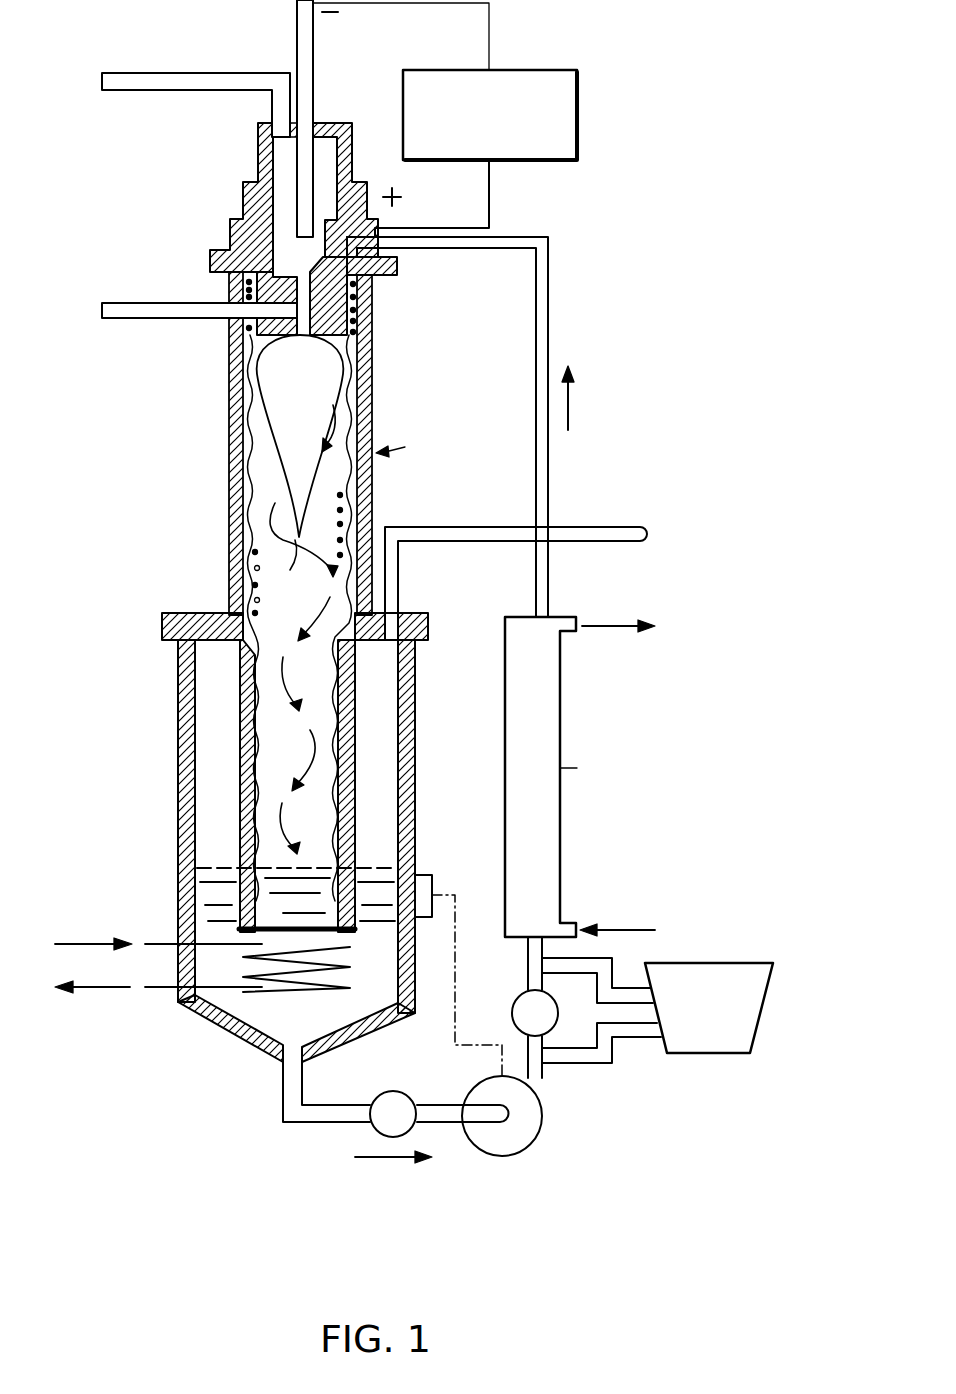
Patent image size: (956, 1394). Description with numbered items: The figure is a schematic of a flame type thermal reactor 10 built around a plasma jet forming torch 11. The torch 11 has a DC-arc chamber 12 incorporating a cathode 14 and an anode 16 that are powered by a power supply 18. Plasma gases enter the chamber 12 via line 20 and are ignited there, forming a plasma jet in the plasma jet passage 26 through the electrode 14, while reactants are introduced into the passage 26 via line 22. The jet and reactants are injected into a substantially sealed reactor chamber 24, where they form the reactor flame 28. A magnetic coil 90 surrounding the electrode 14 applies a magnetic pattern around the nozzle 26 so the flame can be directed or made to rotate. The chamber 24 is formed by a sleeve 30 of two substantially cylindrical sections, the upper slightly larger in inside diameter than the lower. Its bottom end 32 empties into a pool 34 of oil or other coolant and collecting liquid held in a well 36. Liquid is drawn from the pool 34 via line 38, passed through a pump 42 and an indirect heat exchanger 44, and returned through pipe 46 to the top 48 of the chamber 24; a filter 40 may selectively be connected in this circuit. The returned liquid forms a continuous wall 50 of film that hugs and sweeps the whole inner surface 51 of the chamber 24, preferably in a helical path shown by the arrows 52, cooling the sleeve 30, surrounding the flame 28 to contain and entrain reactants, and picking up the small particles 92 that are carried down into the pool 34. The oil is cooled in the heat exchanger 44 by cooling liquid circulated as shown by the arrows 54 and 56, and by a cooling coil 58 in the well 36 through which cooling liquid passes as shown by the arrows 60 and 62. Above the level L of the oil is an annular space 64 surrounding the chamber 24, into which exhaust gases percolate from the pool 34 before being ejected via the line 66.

The flame type thermal reactor 10 is at (383, 404).
The plasma jet forming torch 11 is at (228, 197).
The DC-arc chamber 12 is at (288, 158).
The cathode 14 is at (325, 294).
The anode 16 is at (308, 124).
The power supply 18 is at (578, 112).
The line 20 is at (152, 73).
The line 22 is at (132, 303).
The reactor chamber 24 is at (325, 480).
The plasma jet passage 26 is at (300, 290).
The reactor flame 28 is at (287, 386).
The sleeve 30 is at (366, 777).
The bottom end 32 is at (345, 905).
The pool 34 is at (208, 890).
The well 36 is at (416, 708).
The line 38 is at (315, 1124).
The filter 40 is at (704, 1053).
The pump 42 is at (541, 1138).
The indirect heat exchanger 44 is at (562, 701).
The pipe 46 is at (552, 287).
The top 48 is at (392, 264).
The continuous wall of liquid film 50 is at (250, 422).
The inner surface 51 is at (248, 455).
The arrows 52 is at (304, 629).
The arrow 54 is at (633, 927).
The arrow 56 is at (606, 620).
The cooling coil 58 is at (277, 990).
The arrow 60 is at (76, 943).
The arrow 62 is at (107, 989).
The annular space 64 is at (212, 692).
The line 66 is at (593, 526).
The magnetic coil 90 is at (364, 323).
The small particles 92 is at (256, 612).
The level L is at (225, 867).